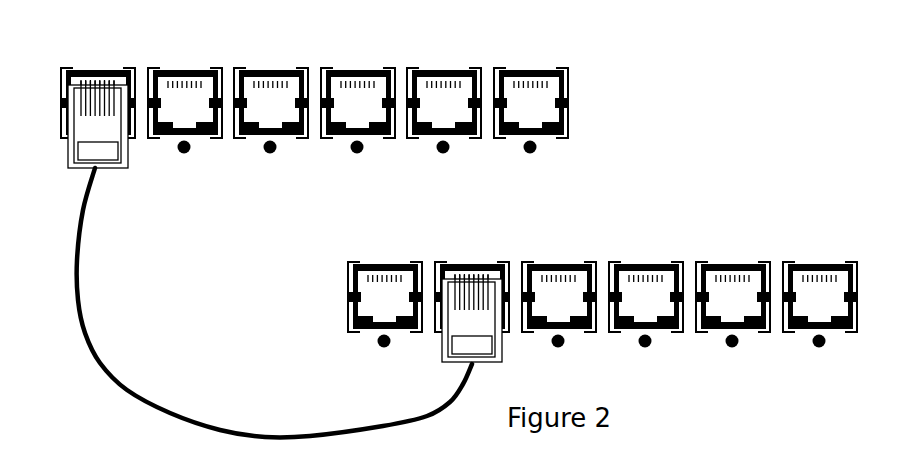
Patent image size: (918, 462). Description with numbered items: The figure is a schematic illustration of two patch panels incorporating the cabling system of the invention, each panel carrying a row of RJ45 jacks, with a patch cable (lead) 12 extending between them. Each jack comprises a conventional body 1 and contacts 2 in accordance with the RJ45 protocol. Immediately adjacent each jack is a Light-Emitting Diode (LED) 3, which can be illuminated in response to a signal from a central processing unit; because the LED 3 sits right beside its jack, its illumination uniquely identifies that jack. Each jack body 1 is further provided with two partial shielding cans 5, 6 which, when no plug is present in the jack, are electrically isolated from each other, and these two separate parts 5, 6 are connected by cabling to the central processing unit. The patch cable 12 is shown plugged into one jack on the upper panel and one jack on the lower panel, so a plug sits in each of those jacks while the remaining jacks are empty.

The jack body 1 is at (108, 73).
The contacts 2 is at (477, 267).
The Light-Emitting Diode (LED) 3 is at (190, 149).
The partial shielding can 5 is at (60, 85).
The partial shielding can 6 is at (133, 100).
The patch cable (lead) 12 is at (95, 362).